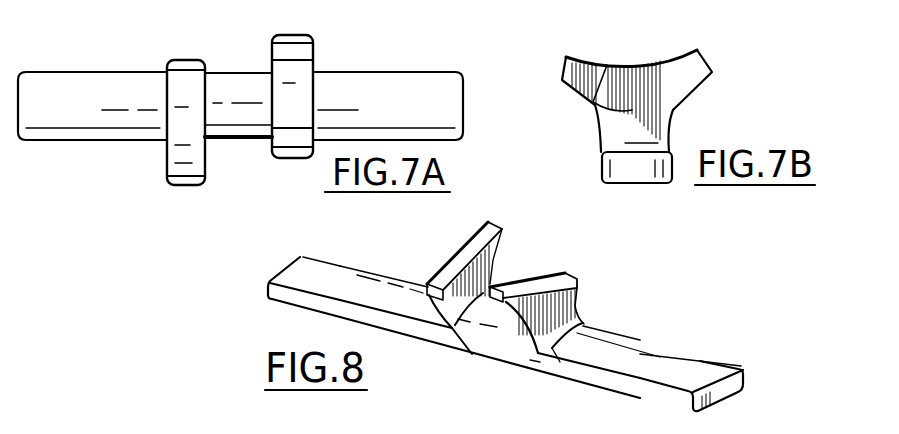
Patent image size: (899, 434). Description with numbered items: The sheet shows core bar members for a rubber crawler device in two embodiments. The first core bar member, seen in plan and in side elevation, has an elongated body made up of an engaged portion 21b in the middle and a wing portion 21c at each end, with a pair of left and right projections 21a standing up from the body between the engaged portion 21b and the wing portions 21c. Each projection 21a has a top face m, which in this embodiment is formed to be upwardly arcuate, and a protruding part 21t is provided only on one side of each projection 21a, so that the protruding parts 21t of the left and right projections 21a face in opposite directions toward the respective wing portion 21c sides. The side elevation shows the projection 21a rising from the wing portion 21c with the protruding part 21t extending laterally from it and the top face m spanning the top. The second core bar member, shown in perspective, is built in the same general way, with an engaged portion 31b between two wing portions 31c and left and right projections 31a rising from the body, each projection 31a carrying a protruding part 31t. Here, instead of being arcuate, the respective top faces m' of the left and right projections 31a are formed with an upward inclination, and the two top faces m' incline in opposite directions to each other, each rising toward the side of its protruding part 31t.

In FIG. 7A, the projection 21a is at (177, 122).
In FIG. 7B, the projection 21a is at (631, 110).
In FIG. 7A, the engaged portion 21b is at (225, 90).
In FIG. 7A, the wing portion 21c is at (76, 87).
In FIG. 7B, the wing portion 21c is at (626, 165).
In FIG. 7A, the protruding part 21t is at (178, 187).
In FIG. 7B, the protruding part 21t is at (577, 62).
In FIG. 7B, the top face m is at (621, 64).
In FIG. 8, the projection 31a is at (488, 277).
In FIG. 8, the engaged portion 31b is at (478, 341).
In FIG. 8, the wing portion 31c is at (347, 278).
In FIG. 8, the protruding part 31t is at (494, 236).
In FIG. 8, the top face m' is at (507, 252).